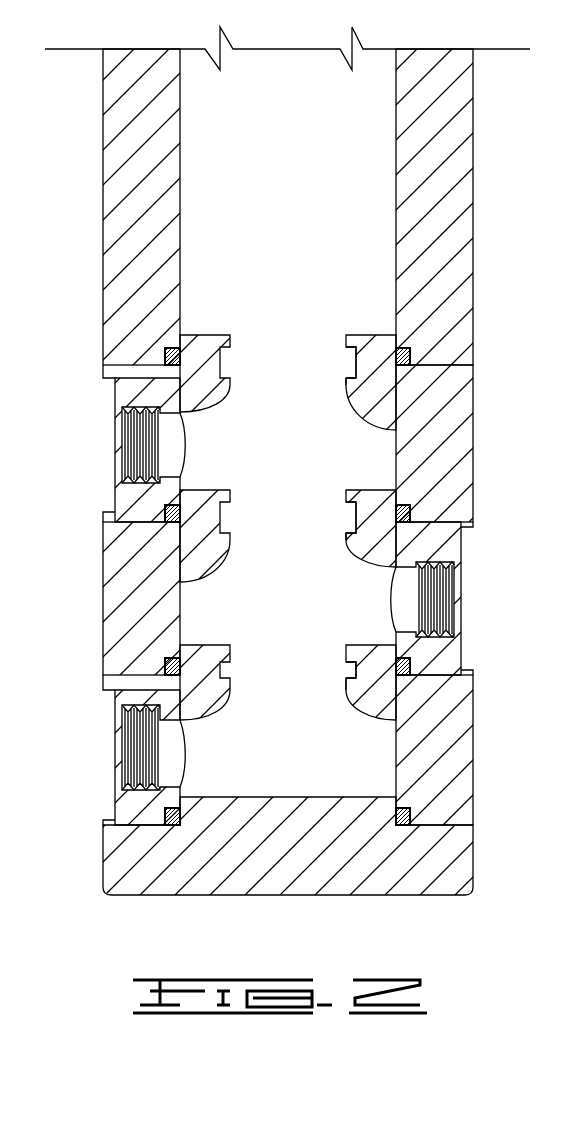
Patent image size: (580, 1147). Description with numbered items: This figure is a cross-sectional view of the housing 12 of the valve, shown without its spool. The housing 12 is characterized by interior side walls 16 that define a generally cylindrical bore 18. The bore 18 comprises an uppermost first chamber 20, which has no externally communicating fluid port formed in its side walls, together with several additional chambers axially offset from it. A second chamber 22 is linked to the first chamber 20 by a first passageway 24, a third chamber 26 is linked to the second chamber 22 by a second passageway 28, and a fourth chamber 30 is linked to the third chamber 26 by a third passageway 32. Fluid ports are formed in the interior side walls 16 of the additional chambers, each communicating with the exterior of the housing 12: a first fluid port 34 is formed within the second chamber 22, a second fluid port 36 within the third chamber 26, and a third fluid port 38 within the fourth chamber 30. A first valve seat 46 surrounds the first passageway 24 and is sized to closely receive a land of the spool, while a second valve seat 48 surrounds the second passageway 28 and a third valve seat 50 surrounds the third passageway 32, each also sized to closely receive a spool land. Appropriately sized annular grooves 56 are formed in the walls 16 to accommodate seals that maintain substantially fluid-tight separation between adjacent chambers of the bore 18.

The housing 12 is at (457, 137).
The interior side walls 16 is at (190, 262).
The bore 18 is at (306, 471).
The first chamber 20 is at (300, 213).
The second chamber 22 is at (275, 433).
The first passageway 24 is at (300, 368).
The third chamber 26 is at (281, 600).
The second passageway 28 is at (300, 525).
The fourth chamber 30 is at (275, 762).
The third passageway 32 is at (300, 678).
The first fluid port 34 is at (170, 452).
The second fluid port 36 is at (410, 604).
The third fluid port 38 is at (170, 757).
The first valve seat 46 is at (348, 342).
The second valve seat 48 is at (348, 502).
The third valve seat 50 is at (348, 656).
The annular grooves 56 is at (579, 340).